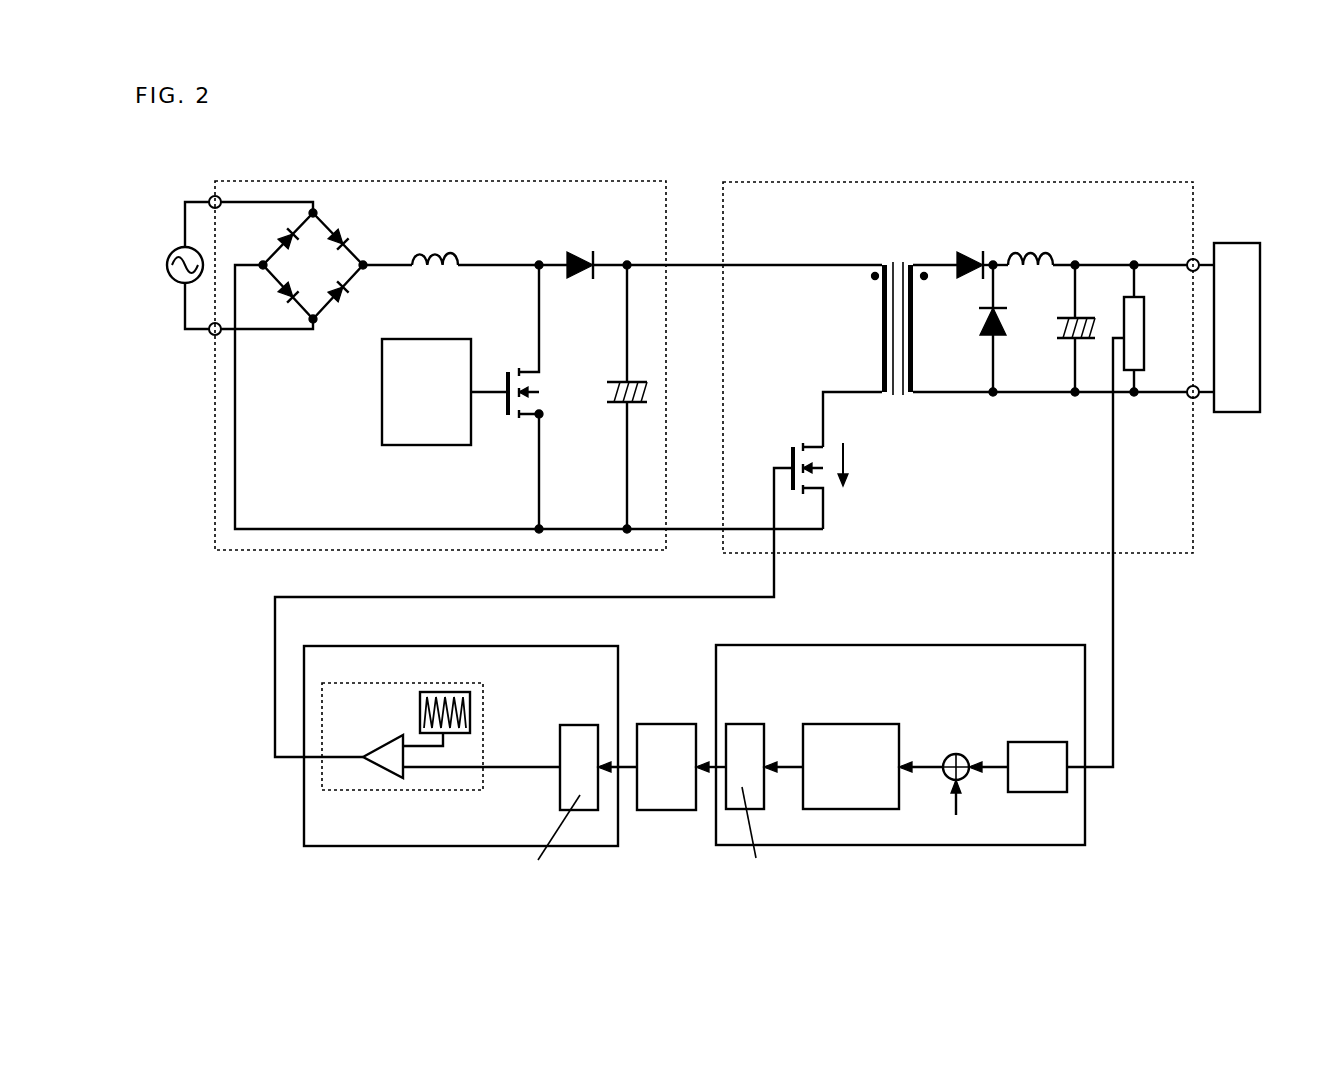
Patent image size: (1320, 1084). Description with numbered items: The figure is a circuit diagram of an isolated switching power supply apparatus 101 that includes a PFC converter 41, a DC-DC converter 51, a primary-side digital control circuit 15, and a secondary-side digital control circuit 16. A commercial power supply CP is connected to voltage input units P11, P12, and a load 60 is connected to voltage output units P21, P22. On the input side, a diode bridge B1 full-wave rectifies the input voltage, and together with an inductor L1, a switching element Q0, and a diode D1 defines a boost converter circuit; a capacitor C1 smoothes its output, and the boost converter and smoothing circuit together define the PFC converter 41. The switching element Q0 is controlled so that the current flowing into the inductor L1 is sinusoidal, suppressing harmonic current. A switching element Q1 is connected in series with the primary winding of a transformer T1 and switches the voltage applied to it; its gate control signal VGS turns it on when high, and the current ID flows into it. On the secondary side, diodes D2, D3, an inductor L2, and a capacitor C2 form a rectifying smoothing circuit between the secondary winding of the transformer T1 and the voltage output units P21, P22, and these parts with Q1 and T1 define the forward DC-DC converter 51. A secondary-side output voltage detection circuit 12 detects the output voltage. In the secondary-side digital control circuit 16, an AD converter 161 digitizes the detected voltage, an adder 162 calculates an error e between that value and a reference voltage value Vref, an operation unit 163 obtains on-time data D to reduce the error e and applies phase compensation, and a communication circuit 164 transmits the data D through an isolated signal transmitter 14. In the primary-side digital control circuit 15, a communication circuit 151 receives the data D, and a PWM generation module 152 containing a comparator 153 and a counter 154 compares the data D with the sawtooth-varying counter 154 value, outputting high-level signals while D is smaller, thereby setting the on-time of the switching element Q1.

The PFC converter 41 is at (460, 181).
The DC-DC converter 51 is at (987, 182).
The switching power supply apparatus 101 is at (1134, 320).
The load 60 is at (1256, 243).
The secondary-side output voltage detection circuit 12 is at (1145, 331).
The primary-side digital control circuit 15 is at (618, 646).
The communication circuit 151 is at (580, 725).
The PWM generation module 152 is at (483, 790).
The comparator 153 is at (388, 742).
The counter 154 is at (471, 712).
The isolated signal transmitter 14 is at (669, 724).
The secondary-side digital control circuit 16 is at (917, 645).
The AD converter 161 is at (1037, 742).
The adder 162 is at (958, 754).
The operation unit 163 is at (853, 724).
The communication circuit 164 is at (745, 724).
The voltage input unit P12 is at (210, 196).
The voltage input unit P11 is at (210, 335).
The voltage output unit P22 is at (1196, 258).
The voltage output unit P21 is at (1197, 398).
The commercial power supply CP is at (172, 265).
The diode bridge B1 is at (294, 265).
The inductor L1 is at (435, 244).
The diode D1 is at (580, 251).
The switching element Q0 is at (507, 397).
The capacitor C1 is at (632, 397).
The transformer T1 is at (899, 258).
The switching element Q1 is at (549, 587).
The diode D2 is at (981, 254).
The diode D3 is at (1006, 328).
The inductor L2 is at (1097, 243).
The capacitor C2 is at (1082, 328).
The gate control signal VGS is at (750, 472).
The current ID is at (850, 464).
The on-time data D is at (641, 751).
The error e is at (934, 750).
The reference voltage value Vref is at (957, 826).